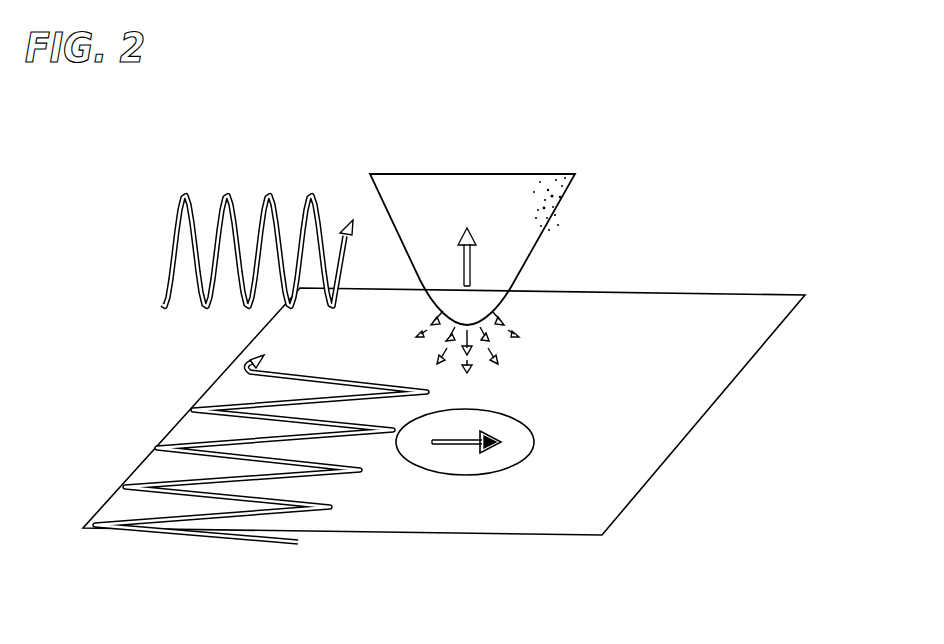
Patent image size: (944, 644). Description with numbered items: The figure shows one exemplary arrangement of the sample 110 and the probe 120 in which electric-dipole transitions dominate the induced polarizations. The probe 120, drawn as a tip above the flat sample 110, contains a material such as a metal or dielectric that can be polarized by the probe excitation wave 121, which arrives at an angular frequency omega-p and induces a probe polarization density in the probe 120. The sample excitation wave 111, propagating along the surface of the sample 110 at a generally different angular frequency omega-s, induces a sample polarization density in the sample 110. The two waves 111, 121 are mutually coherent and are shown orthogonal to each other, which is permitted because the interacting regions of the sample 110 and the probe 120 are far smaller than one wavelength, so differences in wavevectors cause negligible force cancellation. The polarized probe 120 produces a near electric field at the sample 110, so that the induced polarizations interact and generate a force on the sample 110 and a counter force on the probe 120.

The sample 110 is at (520, 422).
The sample excitation wave 111 is at (233, 541).
The probe 120 is at (543, 225).
The probe excitation wave 121 is at (187, 196).